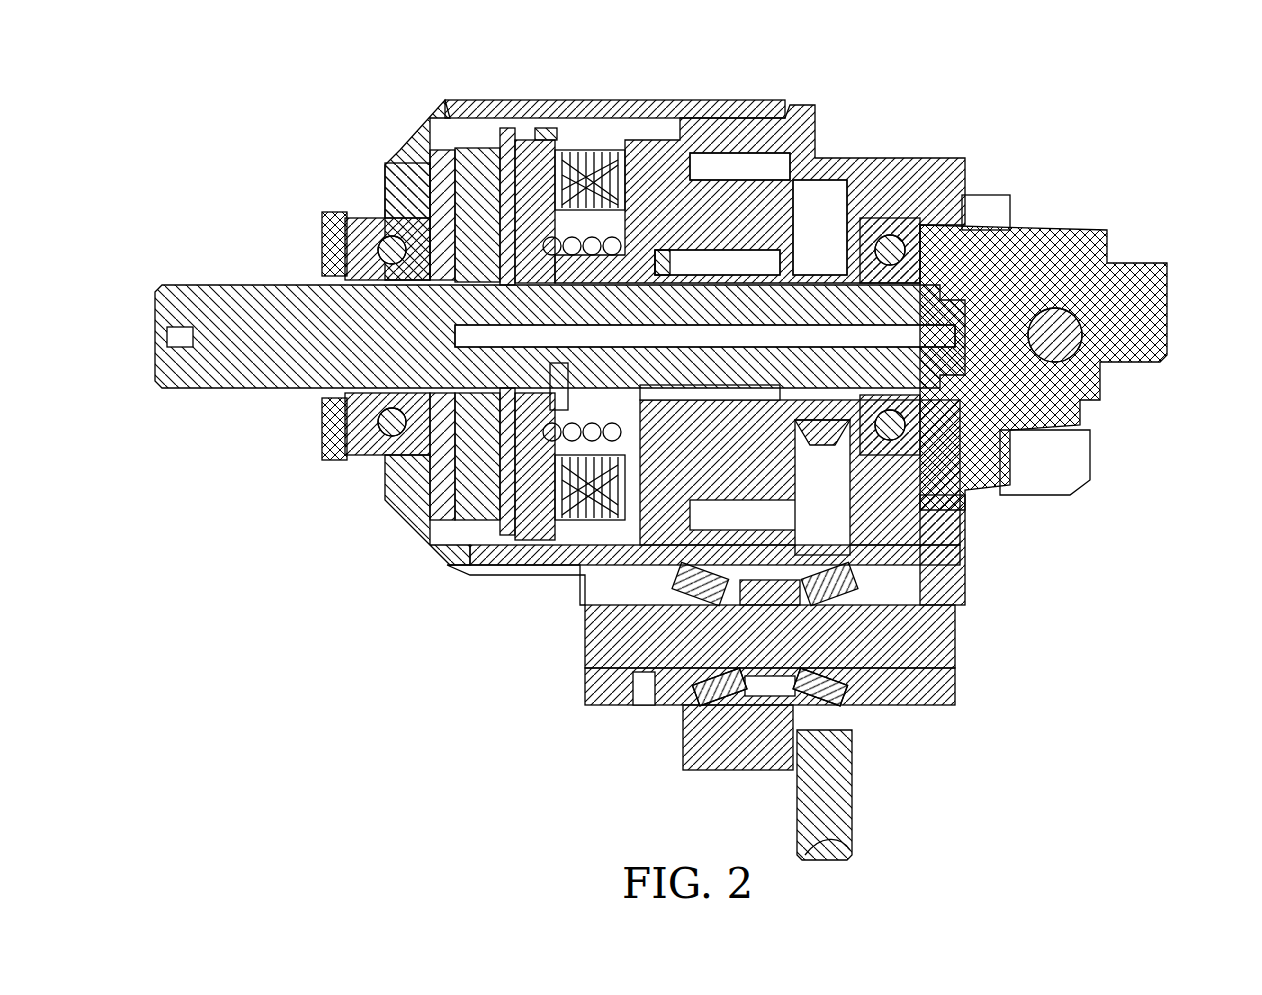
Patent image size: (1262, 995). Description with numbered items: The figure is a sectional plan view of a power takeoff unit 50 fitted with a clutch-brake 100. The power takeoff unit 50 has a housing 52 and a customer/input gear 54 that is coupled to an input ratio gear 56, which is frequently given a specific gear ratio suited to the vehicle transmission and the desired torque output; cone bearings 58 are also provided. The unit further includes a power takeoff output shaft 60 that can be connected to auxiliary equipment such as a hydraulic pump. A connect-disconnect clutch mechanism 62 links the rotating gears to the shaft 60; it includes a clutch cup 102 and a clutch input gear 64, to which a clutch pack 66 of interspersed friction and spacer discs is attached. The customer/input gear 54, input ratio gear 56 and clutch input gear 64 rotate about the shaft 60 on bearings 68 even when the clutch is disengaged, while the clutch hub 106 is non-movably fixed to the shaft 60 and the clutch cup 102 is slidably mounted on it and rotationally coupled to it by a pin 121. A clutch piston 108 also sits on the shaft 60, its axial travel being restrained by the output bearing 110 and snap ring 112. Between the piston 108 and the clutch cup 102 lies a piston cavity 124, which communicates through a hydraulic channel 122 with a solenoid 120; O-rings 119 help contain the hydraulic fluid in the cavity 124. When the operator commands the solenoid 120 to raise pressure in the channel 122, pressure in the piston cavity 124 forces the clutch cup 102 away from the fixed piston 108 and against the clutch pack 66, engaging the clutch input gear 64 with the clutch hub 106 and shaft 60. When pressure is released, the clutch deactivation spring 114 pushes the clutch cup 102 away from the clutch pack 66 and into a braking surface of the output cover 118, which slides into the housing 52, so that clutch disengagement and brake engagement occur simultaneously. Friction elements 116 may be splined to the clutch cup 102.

The power takeoff unit 50 is at (1145, 135).
The housing 52 is at (735, 180).
The customer/input gear 54 is at (855, 805).
The input ratio gear 56 is at (683, 760).
The cone bearings 58 is at (680, 700).
The power takeoff output shaft 60 is at (170, 390).
The connect-disconnect clutch mechanism 62 is at (748, 56).
The clutch input gear 64 is at (800, 100).
The clutch pack 66 is at (598, 148).
The bearings 68 is at (700, 158).
The clutch-brake 100 is at (450, 50).
The clutch cup 102 is at (555, 135).
The clutch hub 106 is at (765, 150).
The clutch piston 108 is at (455, 175).
The output bearing 110 is at (350, 250).
The snap ring 112 is at (420, 272).
The clutch deactivation spring 114 is at (445, 170).
The friction element 116 is at (560, 128).
The output cover 118 is at (445, 100).
The O-rings 119 is at (497, 165).
The solenoid 120 is at (1085, 350).
The pin 121 is at (572, 410).
The hydraulic channel 122 is at (450, 334).
The piston cavity 124 is at (455, 455).